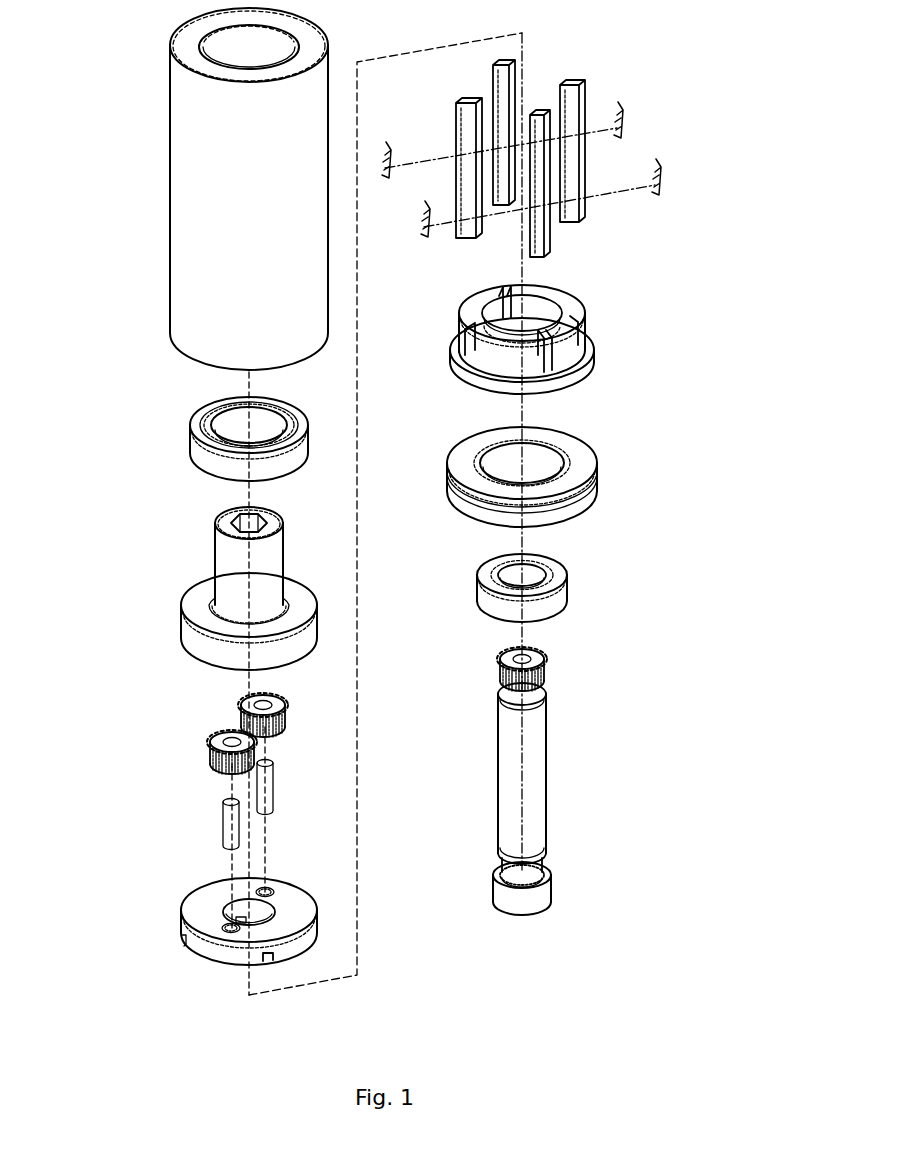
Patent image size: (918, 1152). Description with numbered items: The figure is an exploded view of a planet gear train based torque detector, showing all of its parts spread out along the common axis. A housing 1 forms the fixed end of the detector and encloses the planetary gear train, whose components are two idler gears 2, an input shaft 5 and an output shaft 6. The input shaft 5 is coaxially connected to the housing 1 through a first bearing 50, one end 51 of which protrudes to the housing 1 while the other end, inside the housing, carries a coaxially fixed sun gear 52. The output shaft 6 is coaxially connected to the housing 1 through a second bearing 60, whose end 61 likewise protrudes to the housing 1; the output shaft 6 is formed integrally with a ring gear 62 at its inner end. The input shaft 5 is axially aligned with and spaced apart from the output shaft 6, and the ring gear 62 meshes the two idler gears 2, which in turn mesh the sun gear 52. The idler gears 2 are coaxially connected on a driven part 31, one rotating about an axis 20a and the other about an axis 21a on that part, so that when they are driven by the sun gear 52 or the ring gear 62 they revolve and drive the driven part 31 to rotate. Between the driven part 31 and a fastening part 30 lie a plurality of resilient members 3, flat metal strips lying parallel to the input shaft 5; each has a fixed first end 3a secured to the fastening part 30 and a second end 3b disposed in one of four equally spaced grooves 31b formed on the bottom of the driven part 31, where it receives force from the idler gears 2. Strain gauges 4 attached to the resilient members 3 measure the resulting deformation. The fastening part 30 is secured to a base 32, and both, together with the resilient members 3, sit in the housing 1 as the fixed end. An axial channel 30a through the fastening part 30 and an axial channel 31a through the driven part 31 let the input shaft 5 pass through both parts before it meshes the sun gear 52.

The housing 1 is at (192, 186).
The idler gears 2 is at (210, 752).
The resilient members 3 is at (537, 155).
The first end 3a is at (545, 260).
The second end 3b is at (538, 114).
The strain gauges 4 is at (662, 188).
The input shaft 5 is at (532, 780).
The output shaft 6 is at (210, 548).
The axis 20a is at (226, 824).
The axis 21a is at (272, 787).
The fastening part 30 is at (518, 339).
The axial channel 30a is at (500, 300).
The driven part 31 is at (238, 938).
The axial channel 31a is at (262, 912).
The grooves 31b is at (270, 965).
The base 32 is at (580, 507).
The first bearing 50 is at (560, 605).
The end 51 is at (538, 912).
The sun gear 52 is at (547, 665).
The second bearing 60 is at (200, 452).
The end 61 is at (236, 522).
The ring gear 62 is at (200, 640).